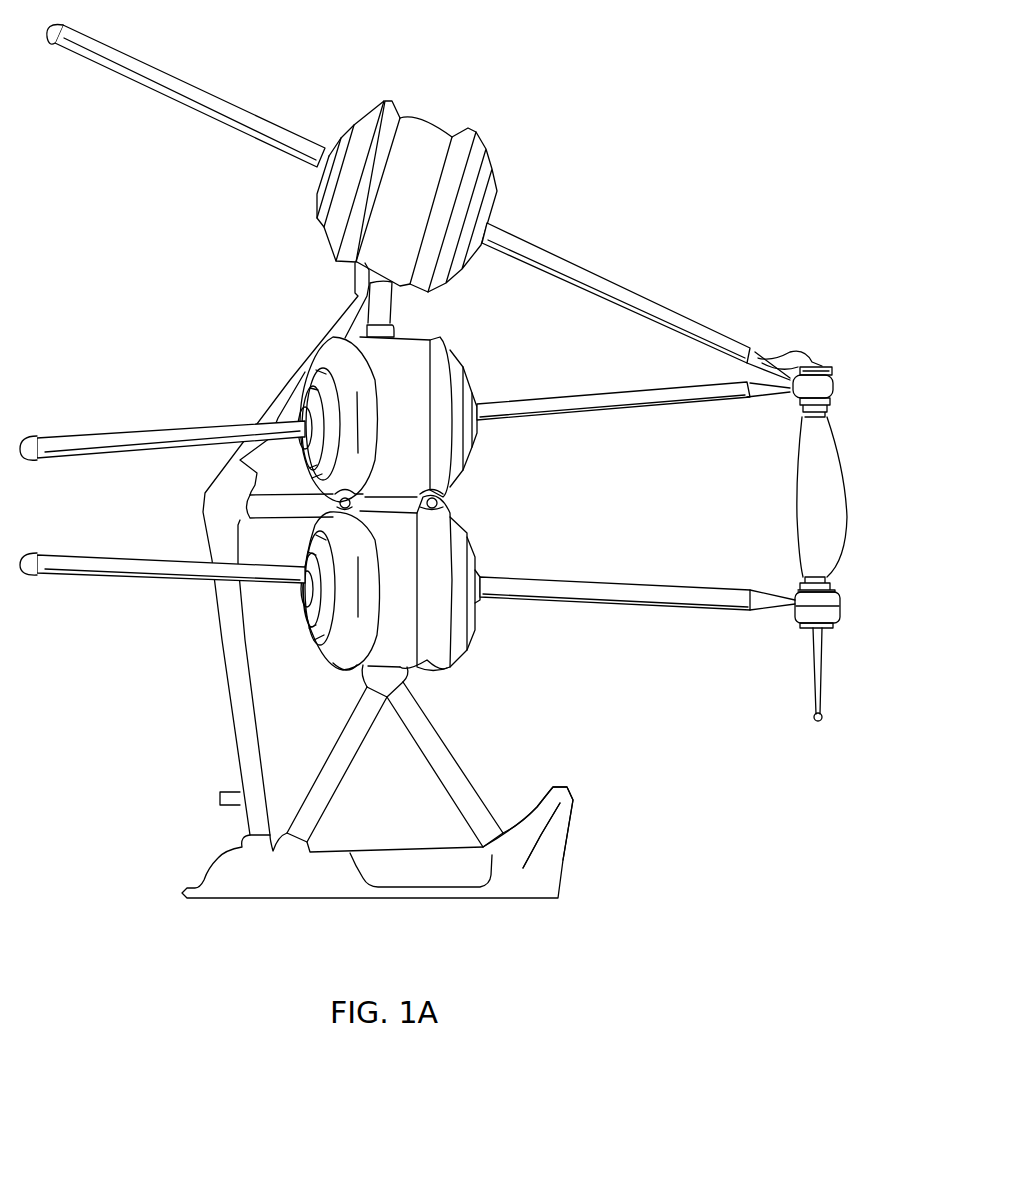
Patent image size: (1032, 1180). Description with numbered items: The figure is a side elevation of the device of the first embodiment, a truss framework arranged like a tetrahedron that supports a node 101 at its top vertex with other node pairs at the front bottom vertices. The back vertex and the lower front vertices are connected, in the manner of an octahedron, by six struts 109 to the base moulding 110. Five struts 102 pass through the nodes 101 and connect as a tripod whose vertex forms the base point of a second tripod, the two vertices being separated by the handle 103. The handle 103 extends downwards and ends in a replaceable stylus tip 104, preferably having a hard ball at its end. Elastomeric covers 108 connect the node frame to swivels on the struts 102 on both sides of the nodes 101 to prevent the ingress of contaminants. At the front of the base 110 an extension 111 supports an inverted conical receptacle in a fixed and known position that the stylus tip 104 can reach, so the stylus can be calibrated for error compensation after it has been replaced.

The node 101 is at (403, 200).
The strut 102 is at (610, 285).
The handle 103 is at (820, 508).
The stylus tip 104 is at (821, 716).
The elastomeric cover 108 is at (370, 117).
The strut 109 is at (240, 747).
The base moulding 110 is at (227, 890).
The extension 111 is at (568, 789).